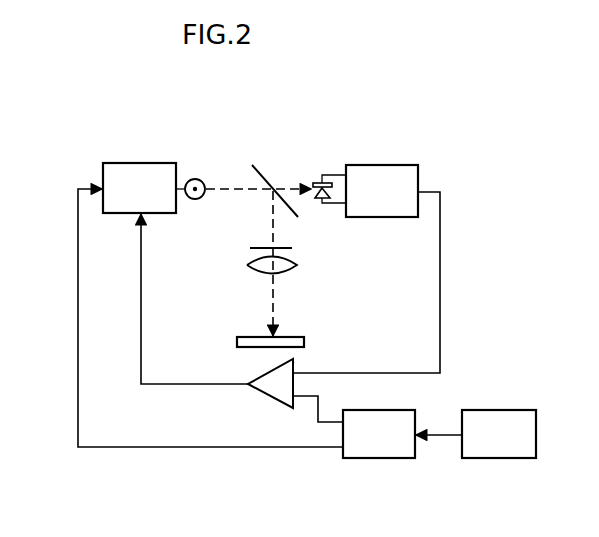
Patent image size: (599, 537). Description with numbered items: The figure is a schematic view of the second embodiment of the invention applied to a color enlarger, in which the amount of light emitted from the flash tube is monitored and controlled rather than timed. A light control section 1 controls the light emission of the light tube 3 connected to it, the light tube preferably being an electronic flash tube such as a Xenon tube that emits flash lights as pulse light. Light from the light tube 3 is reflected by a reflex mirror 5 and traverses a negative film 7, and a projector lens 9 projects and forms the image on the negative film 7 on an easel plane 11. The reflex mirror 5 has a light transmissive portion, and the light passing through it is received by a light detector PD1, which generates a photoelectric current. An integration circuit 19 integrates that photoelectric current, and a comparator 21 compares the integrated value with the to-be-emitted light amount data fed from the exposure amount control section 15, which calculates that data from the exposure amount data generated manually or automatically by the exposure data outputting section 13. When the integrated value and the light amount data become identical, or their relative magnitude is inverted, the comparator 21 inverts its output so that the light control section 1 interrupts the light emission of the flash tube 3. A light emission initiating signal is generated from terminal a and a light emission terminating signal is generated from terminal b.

The light control section 1 is at (140, 163).
The light tube 3 is at (195, 200).
The reflex mirror 5 is at (262, 172).
The negative film 7 is at (285, 247).
The projector lens 9 is at (288, 270).
The easel plane 11 is at (303, 338).
The light detector PD1 is at (317, 203).
The integration circuit 19 is at (407, 165).
The comparator 21 is at (270, 400).
The exposure amount control section 15 is at (383, 459).
The exposure data outputting section 13 is at (500, 460).
The terminal a is at (78, 263).
The terminal b is at (140, 265).